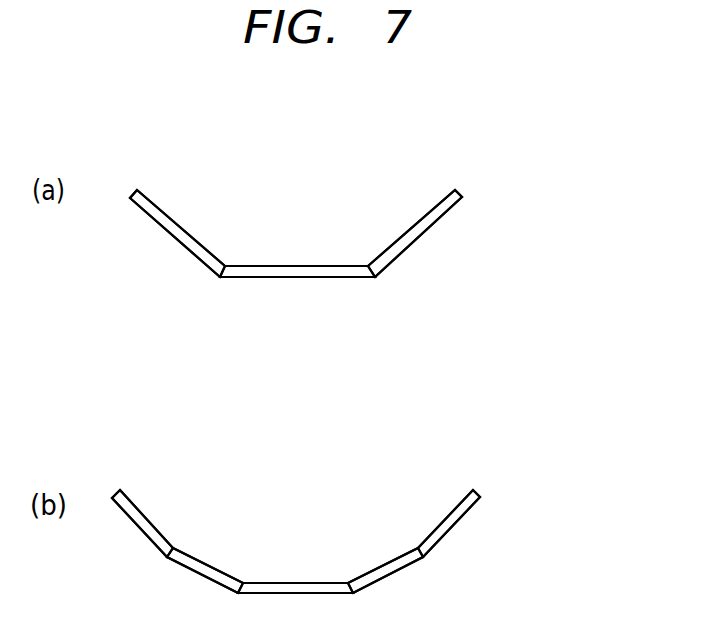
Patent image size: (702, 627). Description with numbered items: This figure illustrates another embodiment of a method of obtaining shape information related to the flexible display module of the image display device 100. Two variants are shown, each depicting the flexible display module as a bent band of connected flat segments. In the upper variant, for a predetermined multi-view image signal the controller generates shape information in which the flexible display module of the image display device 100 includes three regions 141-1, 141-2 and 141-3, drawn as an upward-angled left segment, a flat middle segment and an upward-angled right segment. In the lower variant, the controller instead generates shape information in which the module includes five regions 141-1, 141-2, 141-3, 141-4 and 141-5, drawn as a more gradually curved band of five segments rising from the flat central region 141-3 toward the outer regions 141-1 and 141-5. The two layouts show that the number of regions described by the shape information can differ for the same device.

The image display device 100 is at (461, 193).
The first region 141-1 is at (178, 220).
The second region 141-2 is at (290, 265).
The third region 141-3 is at (411, 227).
The fourth region 141-4 is at (387, 564).
The fifth region 141-5 is at (443, 521).